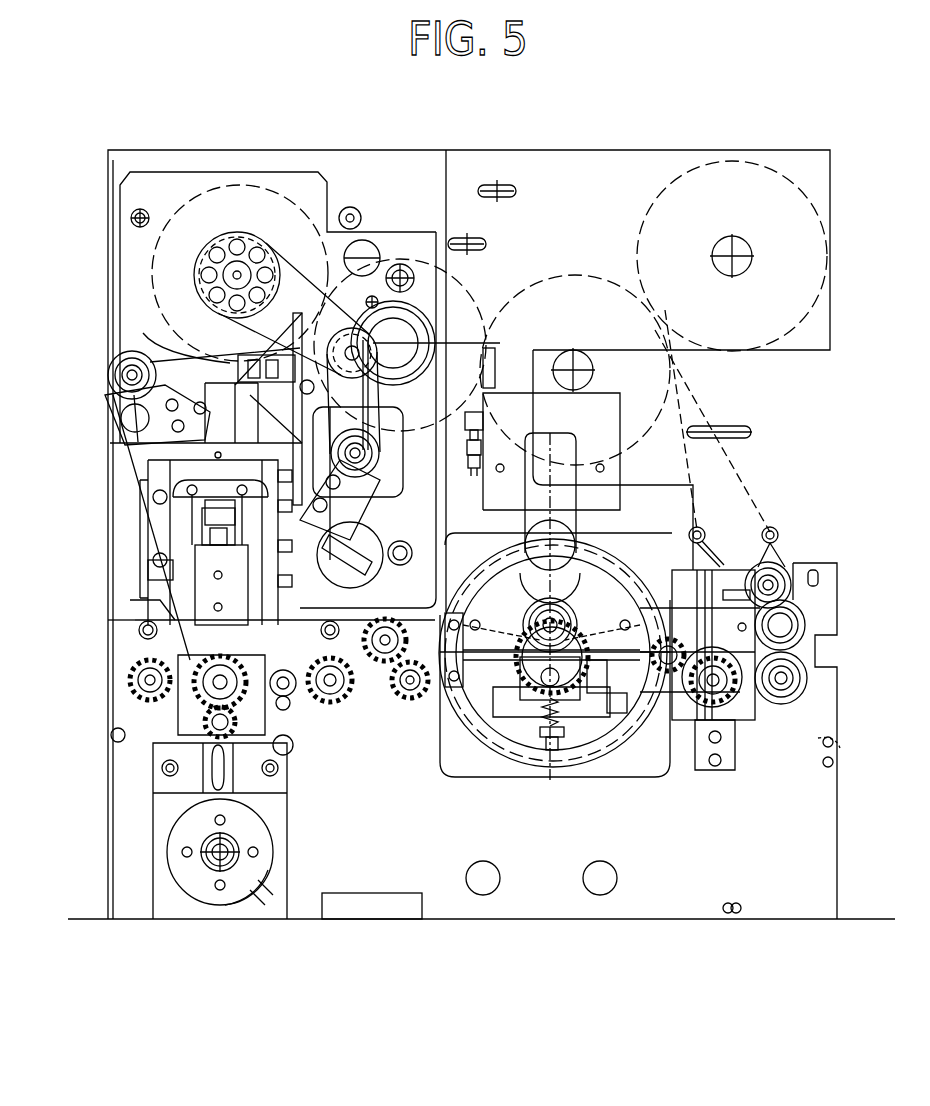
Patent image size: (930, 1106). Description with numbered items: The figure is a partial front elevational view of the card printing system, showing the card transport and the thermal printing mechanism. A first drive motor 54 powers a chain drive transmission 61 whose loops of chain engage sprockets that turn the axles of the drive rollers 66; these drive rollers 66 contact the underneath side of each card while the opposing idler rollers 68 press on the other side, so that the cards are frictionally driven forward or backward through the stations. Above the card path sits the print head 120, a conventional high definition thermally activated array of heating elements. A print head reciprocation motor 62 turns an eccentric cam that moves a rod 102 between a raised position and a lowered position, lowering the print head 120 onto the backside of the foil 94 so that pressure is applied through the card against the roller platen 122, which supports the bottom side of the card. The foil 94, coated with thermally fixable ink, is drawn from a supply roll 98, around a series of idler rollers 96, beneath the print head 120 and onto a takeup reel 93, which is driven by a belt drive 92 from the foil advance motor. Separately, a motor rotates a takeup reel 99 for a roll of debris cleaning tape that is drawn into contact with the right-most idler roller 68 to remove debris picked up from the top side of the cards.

The first drive motor 54 is at (262, 837).
The chain drive transmission 61 is at (308, 728).
The print head reciprocation motor 62 is at (483, 340).
The drive rollers 66 is at (123, 677).
The idler rollers 68 is at (140, 617).
The belt drive 92 is at (303, 284).
The takeup reel 93 is at (168, 205).
The foil 94 is at (175, 337).
The idler rollers 96 is at (107, 377).
The supply roll 98 is at (463, 287).
The takeup reel 99 is at (762, 168).
The rod 102 is at (212, 542).
The print head 120 is at (147, 600).
The roller platen 122 is at (180, 710).